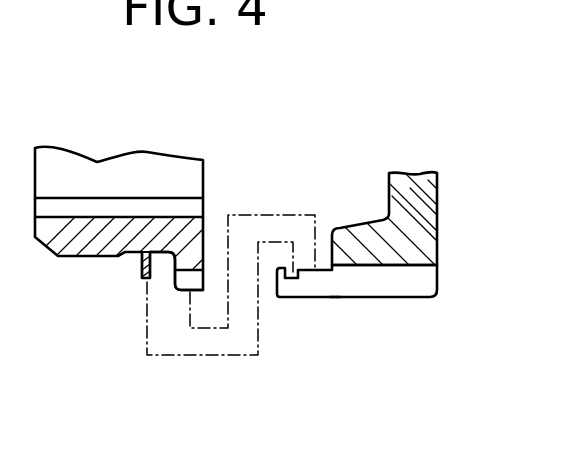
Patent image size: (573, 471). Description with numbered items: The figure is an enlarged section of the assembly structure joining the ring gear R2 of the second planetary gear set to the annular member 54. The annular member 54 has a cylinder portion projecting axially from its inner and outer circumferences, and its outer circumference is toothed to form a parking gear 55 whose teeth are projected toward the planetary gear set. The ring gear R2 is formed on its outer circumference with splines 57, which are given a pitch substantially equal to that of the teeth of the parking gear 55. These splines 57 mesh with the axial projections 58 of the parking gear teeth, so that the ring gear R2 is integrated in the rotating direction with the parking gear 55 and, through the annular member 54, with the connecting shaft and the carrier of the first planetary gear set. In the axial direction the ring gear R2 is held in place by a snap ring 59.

The ring gear R2 is at (192, 208).
The annular member 54 is at (422, 217).
The parking gear 55 is at (382, 283).
The splines 57 is at (186, 286).
The axial projections 58 is at (287, 299).
The snap ring 59 is at (140, 271).